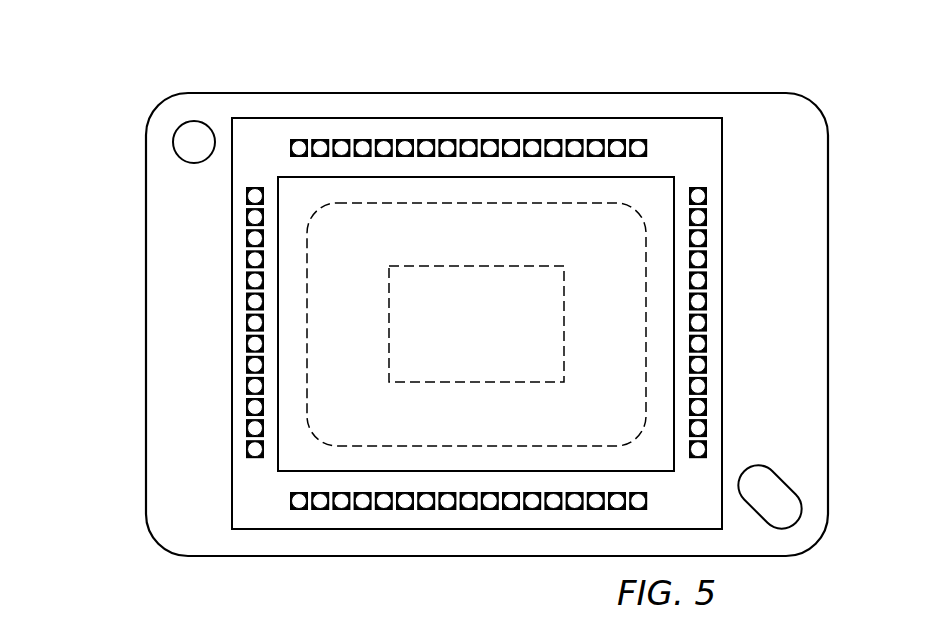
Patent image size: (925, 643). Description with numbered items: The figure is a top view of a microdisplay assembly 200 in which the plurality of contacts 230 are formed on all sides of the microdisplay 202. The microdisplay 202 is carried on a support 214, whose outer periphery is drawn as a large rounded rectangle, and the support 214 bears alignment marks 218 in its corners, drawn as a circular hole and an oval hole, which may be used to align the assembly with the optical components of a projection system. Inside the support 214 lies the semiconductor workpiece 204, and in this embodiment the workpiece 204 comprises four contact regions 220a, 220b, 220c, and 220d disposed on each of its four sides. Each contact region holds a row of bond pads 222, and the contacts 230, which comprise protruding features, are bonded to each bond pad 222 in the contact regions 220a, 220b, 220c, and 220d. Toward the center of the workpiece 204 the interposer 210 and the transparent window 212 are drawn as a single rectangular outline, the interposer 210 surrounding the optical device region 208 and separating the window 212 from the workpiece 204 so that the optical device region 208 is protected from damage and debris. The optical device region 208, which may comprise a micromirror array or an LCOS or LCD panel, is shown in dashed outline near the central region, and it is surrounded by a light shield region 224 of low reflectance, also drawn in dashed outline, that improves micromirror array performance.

The microdisplay assembly 200 is at (649, 69).
The microdisplay 202 is at (368, 567).
The workpiece 204 is at (712, 178).
The optical device region 208 is at (545, 313).
The interposer 210 is at (497, 324).
The window 212 is at (662, 362).
The support 214 is at (828, 228).
The alignment marks 218 is at (194, 152).
The contact region 220a is at (452, 115).
The contact region 220b is at (726, 270).
The contact region 220c is at (503, 531).
The contact region 220d is at (230, 308).
The bond pad 222 is at (648, 147).
The light shield region 224 is at (338, 344).
The contacts 230 is at (342, 147).